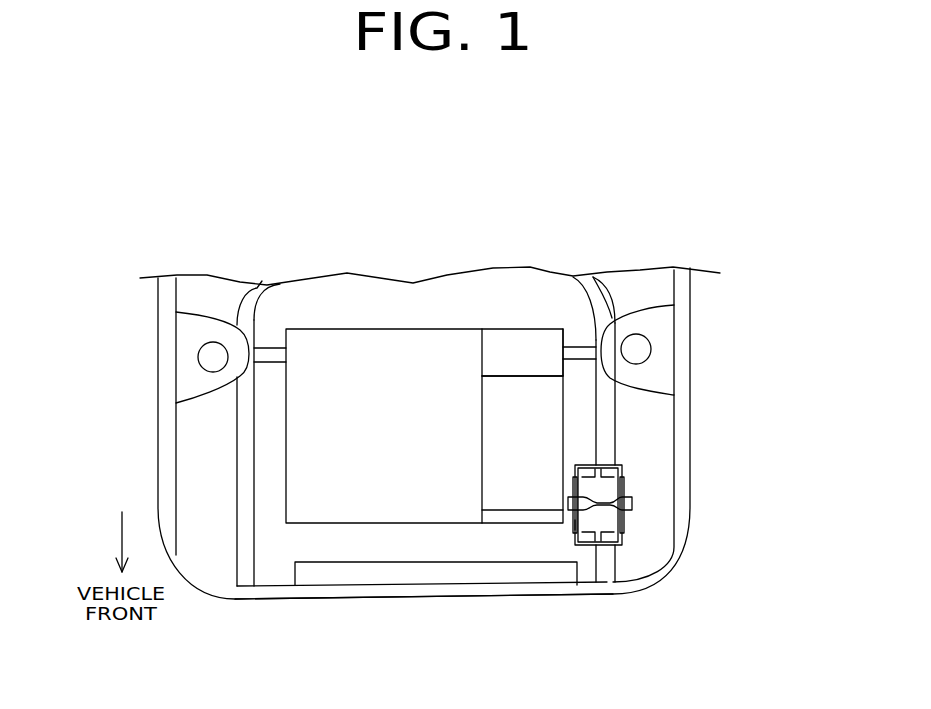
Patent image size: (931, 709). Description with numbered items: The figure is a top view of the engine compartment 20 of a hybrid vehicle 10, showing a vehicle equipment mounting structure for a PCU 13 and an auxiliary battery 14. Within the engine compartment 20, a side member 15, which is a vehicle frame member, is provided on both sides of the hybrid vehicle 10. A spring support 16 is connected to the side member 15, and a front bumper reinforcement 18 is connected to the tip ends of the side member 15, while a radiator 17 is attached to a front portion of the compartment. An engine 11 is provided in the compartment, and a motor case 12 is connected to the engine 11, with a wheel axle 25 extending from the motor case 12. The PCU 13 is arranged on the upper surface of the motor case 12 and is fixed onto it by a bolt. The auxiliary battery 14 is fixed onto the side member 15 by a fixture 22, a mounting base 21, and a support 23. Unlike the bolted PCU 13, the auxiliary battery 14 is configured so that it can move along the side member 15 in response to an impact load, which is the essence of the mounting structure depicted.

The hybrid vehicle 10 is at (398, 137).
The engine 11 is at (403, 329).
The motor case 12 is at (503, 329).
The PCU 13 is at (545, 372).
The auxiliary battery 14 is at (603, 485).
The side member 15 is at (235, 458).
The spring support 16 is at (683, 328).
The radiator 17 is at (350, 576).
The front bumper reinforcement 18 is at (567, 597).
The engine compartment 20 is at (318, 308).
The mounting base 21 is at (622, 540).
The fixture 22 is at (628, 503).
The support 23 is at (572, 526).
The wheel axle 25 is at (590, 320).